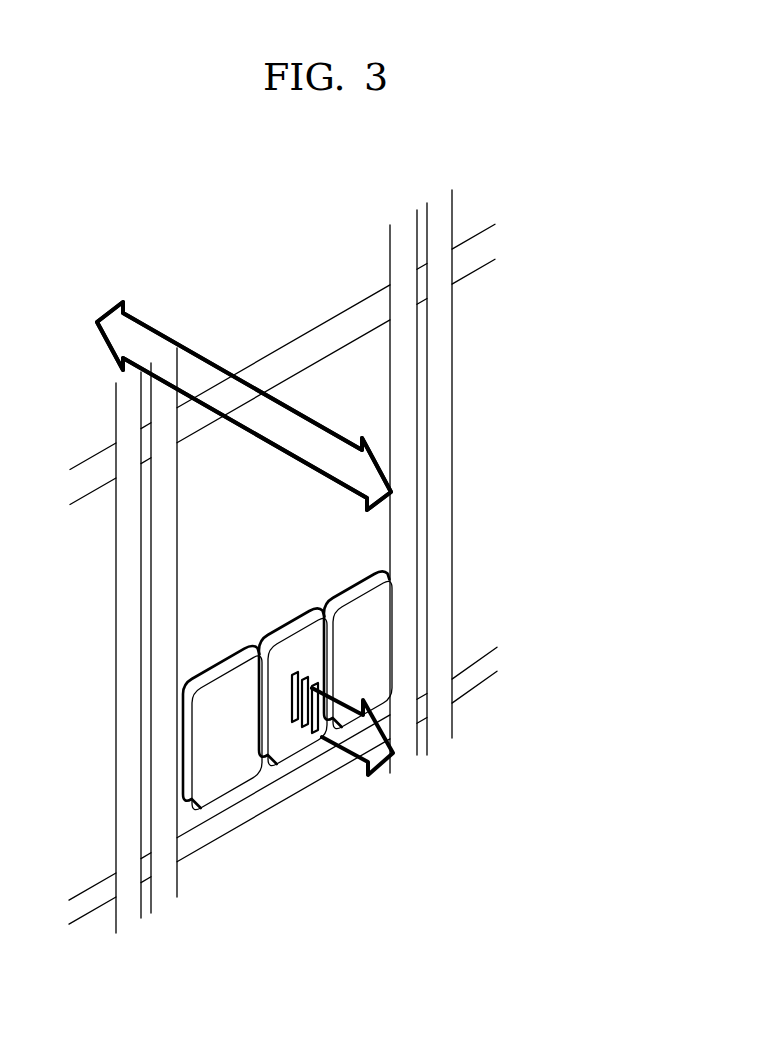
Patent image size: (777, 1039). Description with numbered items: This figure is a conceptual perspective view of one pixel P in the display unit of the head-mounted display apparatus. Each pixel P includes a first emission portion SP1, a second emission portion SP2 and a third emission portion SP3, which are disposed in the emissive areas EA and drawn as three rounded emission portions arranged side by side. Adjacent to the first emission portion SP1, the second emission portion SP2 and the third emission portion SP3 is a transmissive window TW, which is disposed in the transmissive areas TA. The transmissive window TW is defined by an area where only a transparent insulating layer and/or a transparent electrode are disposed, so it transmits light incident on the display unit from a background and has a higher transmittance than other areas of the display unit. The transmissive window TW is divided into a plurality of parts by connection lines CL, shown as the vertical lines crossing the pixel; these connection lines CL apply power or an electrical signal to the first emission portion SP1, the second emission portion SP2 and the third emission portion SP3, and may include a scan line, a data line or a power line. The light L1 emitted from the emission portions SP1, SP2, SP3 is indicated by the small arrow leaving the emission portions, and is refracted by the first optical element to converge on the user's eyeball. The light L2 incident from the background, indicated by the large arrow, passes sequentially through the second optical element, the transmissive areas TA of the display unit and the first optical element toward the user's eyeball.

The pixel P is at (533, 207).
The connection lines CL is at (440, 335).
The transmissive window TW is at (227, 533).
The light incident from a background L2 is at (144, 337).
The transmissive areas TA is at (315, 390).
The emissive areas EA is at (247, 734).
The first emission portion SP1 is at (232, 782).
The second emission portion SP2 is at (296, 742).
The third emission portion SP3 is at (387, 690).
The light emitted from the emission portions L1 is at (355, 700).